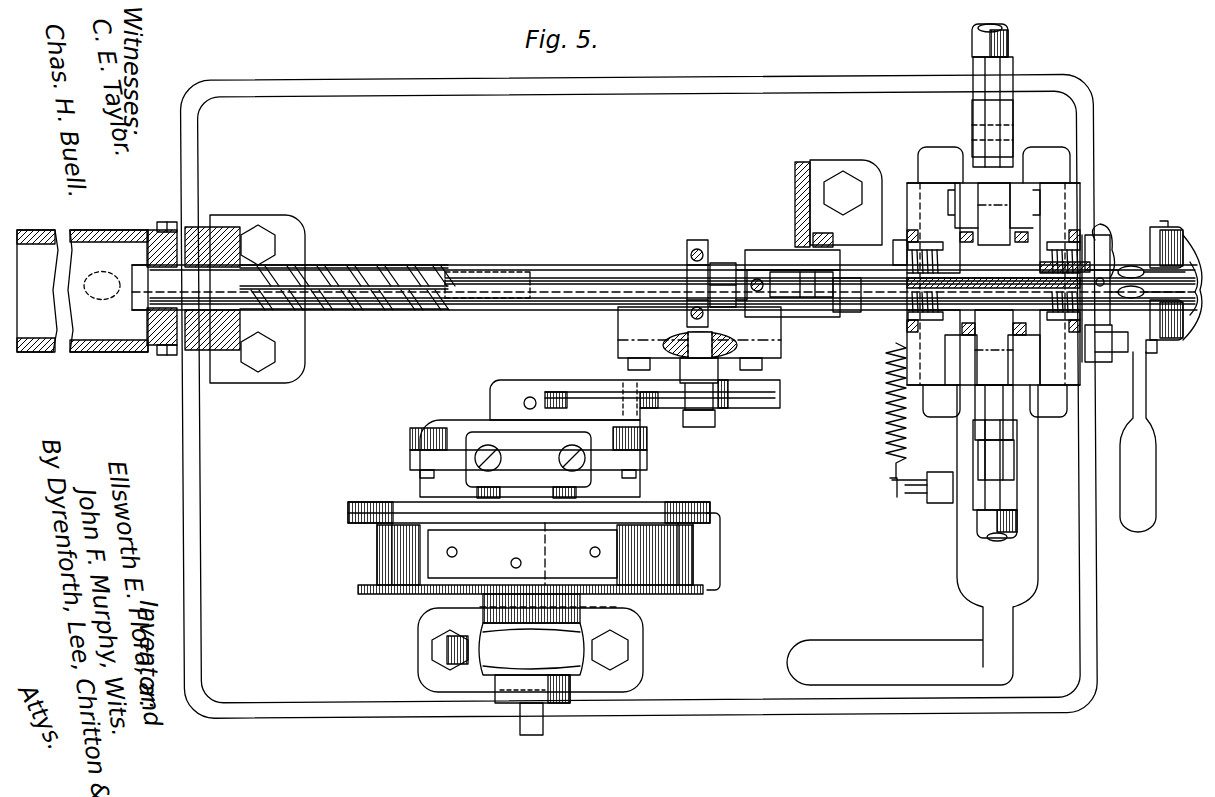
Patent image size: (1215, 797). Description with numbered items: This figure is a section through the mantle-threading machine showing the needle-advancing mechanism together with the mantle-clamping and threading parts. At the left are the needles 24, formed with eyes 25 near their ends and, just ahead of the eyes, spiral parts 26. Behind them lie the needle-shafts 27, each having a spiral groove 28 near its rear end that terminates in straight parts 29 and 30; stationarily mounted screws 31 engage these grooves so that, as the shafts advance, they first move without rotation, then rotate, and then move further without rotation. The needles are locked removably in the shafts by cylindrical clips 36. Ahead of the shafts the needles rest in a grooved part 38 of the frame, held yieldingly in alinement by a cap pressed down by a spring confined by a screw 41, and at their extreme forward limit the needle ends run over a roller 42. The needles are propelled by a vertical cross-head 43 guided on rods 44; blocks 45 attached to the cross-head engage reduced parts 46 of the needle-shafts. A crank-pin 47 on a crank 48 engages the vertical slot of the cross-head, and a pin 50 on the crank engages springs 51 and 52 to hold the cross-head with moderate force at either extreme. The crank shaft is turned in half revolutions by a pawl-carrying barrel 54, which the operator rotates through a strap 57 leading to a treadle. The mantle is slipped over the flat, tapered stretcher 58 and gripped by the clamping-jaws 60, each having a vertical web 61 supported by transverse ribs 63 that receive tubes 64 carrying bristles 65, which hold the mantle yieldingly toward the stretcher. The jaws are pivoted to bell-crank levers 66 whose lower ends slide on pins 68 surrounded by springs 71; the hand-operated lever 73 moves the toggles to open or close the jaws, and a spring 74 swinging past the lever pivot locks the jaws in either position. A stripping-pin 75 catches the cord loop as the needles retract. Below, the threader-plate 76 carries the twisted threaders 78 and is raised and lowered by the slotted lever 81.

The needles 24 is at (838, 300).
The eyes 25 is at (1118, 252).
The spiral parts 26 is at (1180, 312).
The needle-shafts 27 is at (548, 304).
The spiral groove 28 is at (392, 268).
The straight part 29 is at (492, 280).
The straight part 30 is at (83, 291).
The screws 31 is at (172, 230).
The cylindrical clips 36 is at (725, 290).
The grooved part 38 is at (780, 262).
The screw 41 is at (762, 292).
The roller 42 is at (1178, 240).
The cross-head 43 is at (630, 347).
The rods 44 is at (425, 312).
The blocks 45 is at (696, 248).
The reduced parts 46 is at (692, 300).
The crank-pin 47 is at (700, 405).
The crank 48 is at (572, 392).
The pin 50 is at (630, 420).
The spring 51 is at (432, 428).
The spring 52 is at (648, 445).
The barrel 54 is at (385, 552).
The strap 57 is at (690, 552).
The stretcher 58 is at (1030, 275).
The clamping-jaws 60 is at (940, 185).
The vertical web 61 is at (985, 300).
The transverse ribs 63 is at (905, 232).
The tubes 64 is at (905, 262).
The bristles 65 is at (950, 245).
The bell-crank lever 66 is at (995, 130).
The pins 68 is at (998, 30).
The springs 71 is at (1000, 103).
The hand-operated lever 73 is at (1010, 612).
The spring 74 is at (885, 440).
The stripping-pin 75 is at (1100, 240).
The threader-plate 76 is at (1105, 362).
The threaders 78 is at (1134, 281).
The lever 81 is at (1140, 510).